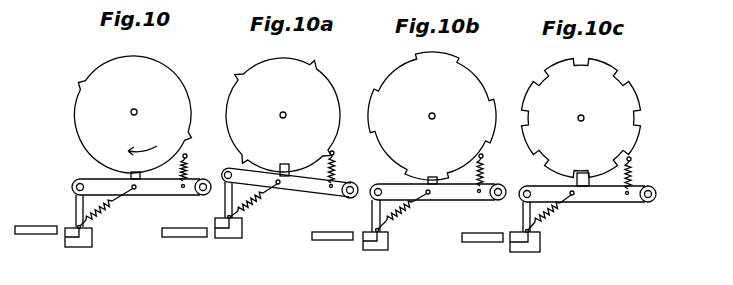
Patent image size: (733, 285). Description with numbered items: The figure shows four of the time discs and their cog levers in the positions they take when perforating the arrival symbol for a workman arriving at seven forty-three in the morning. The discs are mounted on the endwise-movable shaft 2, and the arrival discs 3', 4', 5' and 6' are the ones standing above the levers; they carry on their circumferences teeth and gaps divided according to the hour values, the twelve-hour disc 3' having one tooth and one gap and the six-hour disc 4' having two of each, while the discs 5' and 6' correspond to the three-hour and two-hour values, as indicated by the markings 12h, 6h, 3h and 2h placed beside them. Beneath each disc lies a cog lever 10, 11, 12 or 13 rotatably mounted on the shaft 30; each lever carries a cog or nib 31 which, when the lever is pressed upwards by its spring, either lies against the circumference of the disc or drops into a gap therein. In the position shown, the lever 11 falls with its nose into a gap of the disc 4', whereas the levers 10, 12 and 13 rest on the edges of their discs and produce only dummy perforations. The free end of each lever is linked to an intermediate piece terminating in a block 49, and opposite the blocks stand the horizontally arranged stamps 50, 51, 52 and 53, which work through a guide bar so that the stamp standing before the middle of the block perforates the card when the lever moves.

In FIG. 10, the shaft 2 is at (137, 112).
In FIG. 10, the disc 3' is at (133, 114).
In FIG. 10A, the disc 4' is at (283, 115).
In FIG. 10B, the disc 5' is at (432, 116).
In FIG. 10C, the disc 6' is at (581, 118).
In FIG. 10, the cog lever 10 is at (155, 194).
In FIG. 10A, the cog lever 11 is at (302, 197).
In FIG. 10B, the cog lever 12 is at (455, 199).
In FIG. 10C, the cog lever 13 is at (608, 203).
In FIG. 10, the shaft 30 is at (203, 180).
In FIG. 10A, the cog or nib 31 is at (286, 165).
In FIG. 10, the block 49 is at (92, 237).
In FIG. 10, the stamp 50 is at (38, 234).
In FIG. 10, the stamp 51 is at (189, 237).
In FIG. 10A, the stamp 52 is at (335, 241).
In FIG. 10B, the stamp 53 is at (490, 243).
In FIG. 10, the 12 hour indication 12h is at (72, 58).
In FIG. 10A, the 6 hour indication 6h is at (225, 60).
In FIG. 10B, the 3 hour indication 3h is at (372, 61).
In FIG. 10C, the 2 hour indication 2h is at (515, 62).